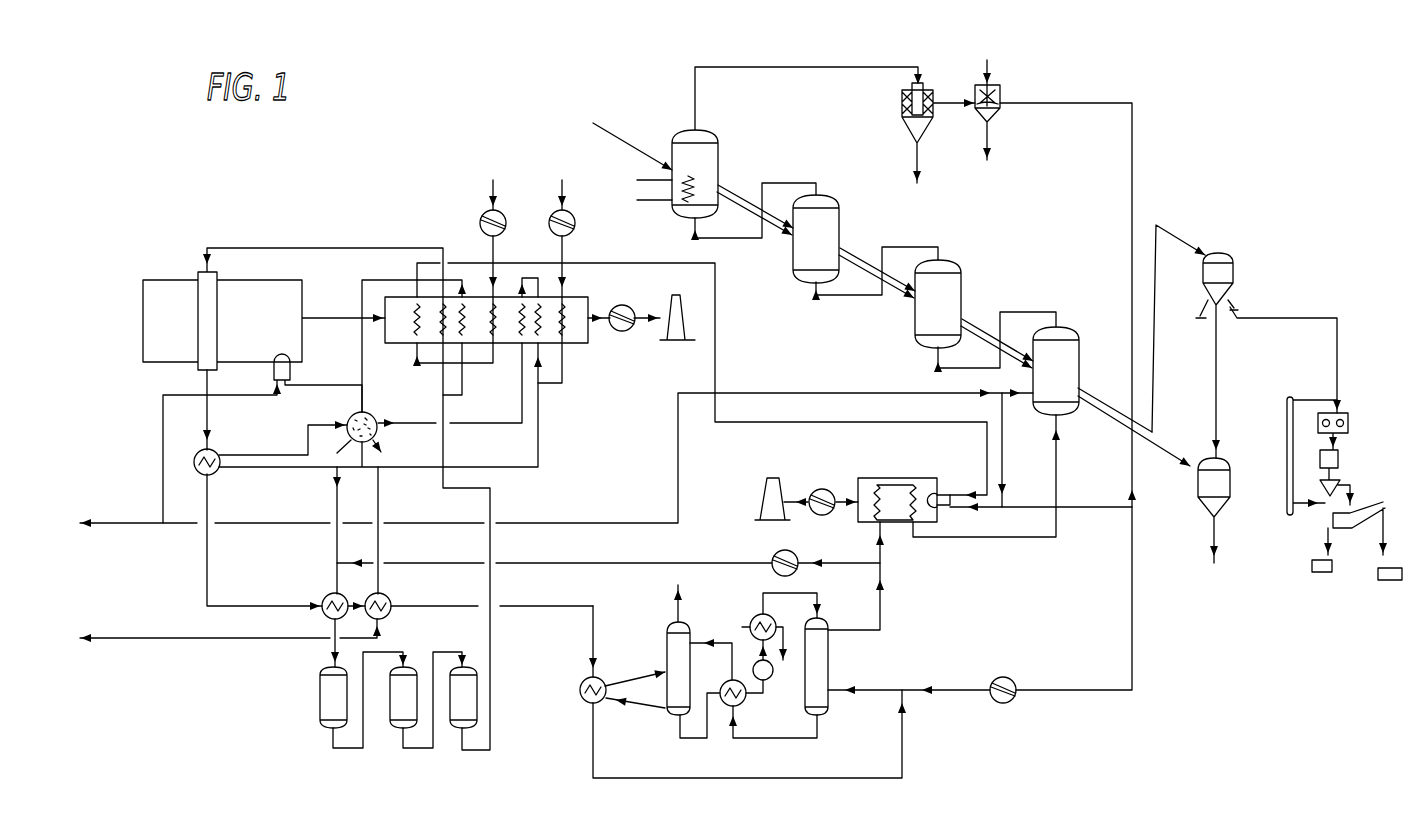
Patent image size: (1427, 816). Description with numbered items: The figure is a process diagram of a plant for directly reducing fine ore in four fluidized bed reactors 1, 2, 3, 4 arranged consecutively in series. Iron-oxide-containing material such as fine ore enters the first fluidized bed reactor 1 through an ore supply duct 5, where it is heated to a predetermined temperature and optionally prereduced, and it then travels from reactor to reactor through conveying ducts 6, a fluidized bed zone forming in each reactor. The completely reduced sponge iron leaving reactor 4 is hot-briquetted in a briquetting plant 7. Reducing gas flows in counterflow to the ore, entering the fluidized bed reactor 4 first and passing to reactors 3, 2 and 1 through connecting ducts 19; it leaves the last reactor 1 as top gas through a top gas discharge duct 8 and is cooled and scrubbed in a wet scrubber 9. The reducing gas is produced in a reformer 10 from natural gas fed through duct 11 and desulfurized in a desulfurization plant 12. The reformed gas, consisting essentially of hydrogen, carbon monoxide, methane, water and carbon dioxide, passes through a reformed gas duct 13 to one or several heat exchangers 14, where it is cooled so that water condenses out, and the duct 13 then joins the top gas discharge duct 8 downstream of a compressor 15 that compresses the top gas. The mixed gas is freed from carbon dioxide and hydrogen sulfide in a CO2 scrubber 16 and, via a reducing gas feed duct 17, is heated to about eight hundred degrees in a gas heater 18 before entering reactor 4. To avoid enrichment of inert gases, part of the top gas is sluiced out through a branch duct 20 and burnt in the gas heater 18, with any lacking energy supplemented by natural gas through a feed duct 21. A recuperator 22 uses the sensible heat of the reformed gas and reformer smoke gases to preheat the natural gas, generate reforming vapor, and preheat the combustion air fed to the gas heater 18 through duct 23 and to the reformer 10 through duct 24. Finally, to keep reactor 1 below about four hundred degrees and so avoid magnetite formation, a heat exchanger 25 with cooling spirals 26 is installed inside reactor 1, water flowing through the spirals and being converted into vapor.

The first fluidized bed reactor 1 is at (700, 168).
The fluidized bed reactor 2 is at (821, 251).
The fluidized bed reactor 3 is at (943, 315).
The fluidized bed reactor 4 is at (1061, 383).
The ore supply duct 5 is at (631, 141).
The conveying ducts 6 is at (746, 210).
The briquetting plant 7 is at (1322, 386).
The top gas discharge duct 8 is at (826, 67).
The wet scrubber 9 is at (998, 86).
The reformer 10 is at (260, 333).
The duct 11 is at (147, 521).
The desulfurization plant 12 is at (320, 737).
The reformed gas duct 13 is at (212, 422).
The heat exchangers 14 is at (216, 473).
The compressor 15 is at (1014, 683).
The CO2 scrubber 16 is at (830, 680).
The reducing gas feed duct 17 is at (950, 538).
The gas heater 18 is at (898, 478).
The connecting ducts 19 is at (840, 340).
The branch duct 20 is at (1100, 509).
The feed duct 21 is at (1002, 468).
The recuperator 22 is at (578, 334).
The duct 23 is at (487, 243).
The duct 24 is at (566, 246).
The heat exchanger 25 is at (652, 203).
The cooling spirals 26 is at (693, 182).